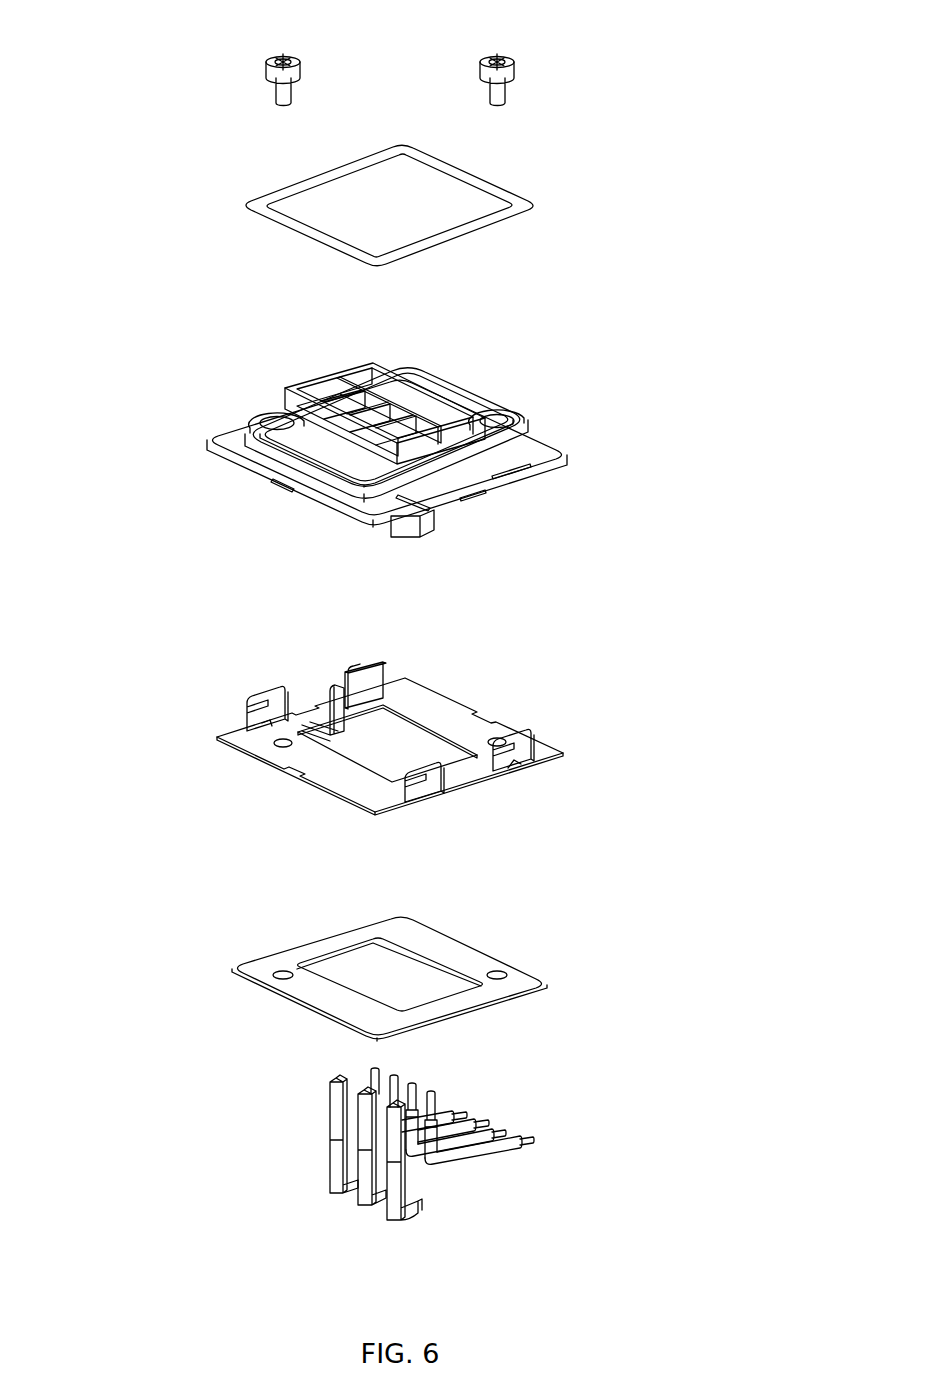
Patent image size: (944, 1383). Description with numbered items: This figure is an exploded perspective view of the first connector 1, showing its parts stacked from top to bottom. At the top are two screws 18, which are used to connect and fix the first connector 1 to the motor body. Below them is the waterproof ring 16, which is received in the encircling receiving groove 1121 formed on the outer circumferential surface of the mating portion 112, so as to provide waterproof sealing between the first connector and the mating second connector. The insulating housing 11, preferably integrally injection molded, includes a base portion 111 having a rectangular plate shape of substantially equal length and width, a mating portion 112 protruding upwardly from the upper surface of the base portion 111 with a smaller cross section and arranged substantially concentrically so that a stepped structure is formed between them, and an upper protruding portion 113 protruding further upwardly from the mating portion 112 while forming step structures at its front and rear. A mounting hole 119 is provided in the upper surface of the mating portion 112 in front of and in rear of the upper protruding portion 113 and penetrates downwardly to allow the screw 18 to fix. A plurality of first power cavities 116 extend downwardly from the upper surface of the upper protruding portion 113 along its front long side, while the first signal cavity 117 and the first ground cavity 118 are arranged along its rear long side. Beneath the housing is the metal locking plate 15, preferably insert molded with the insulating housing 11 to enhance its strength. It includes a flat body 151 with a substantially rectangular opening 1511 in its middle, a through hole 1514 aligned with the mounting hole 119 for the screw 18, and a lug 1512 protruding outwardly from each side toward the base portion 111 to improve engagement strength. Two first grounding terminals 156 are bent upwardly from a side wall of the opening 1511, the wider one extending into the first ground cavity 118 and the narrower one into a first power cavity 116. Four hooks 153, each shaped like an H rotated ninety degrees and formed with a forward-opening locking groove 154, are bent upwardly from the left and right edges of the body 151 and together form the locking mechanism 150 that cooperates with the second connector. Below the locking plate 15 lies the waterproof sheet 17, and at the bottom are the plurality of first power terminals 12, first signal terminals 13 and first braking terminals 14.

The first connector 1 is at (105, 30).
The screw 18 is at (518, 77).
The waterproof ring 16 is at (530, 181).
The insulating housing 11 is at (560, 388).
The base portion 111 is at (545, 450).
The mating portion 112 is at (330, 453).
The receiving groove 1121 is at (272, 443).
The upper protruding portion 113 is at (420, 447).
The first power cavity 116 is at (318, 380).
The first signal cavity 117 is at (420, 400).
The first ground cavity 118 is at (380, 378).
The mounting hole 119 is at (277, 422).
The locking plate 15 is at (538, 690).
The locking mechanism 150 is at (273, 683).
The body 151 is at (237, 747).
The opening 1511 is at (378, 757).
The lug 1512 is at (300, 775).
The through hole 1514 is at (282, 747).
The hook 153 is at (355, 668).
The locking groove 154 is at (515, 762).
The first grounding terminal 156 is at (373, 693).
The waterproof sheet 17 is at (538, 943).
The first power terminal 12 is at (325, 1132).
The first signal terminal 13 is at (485, 1175).
The first braking terminal 14 is at (455, 1110).